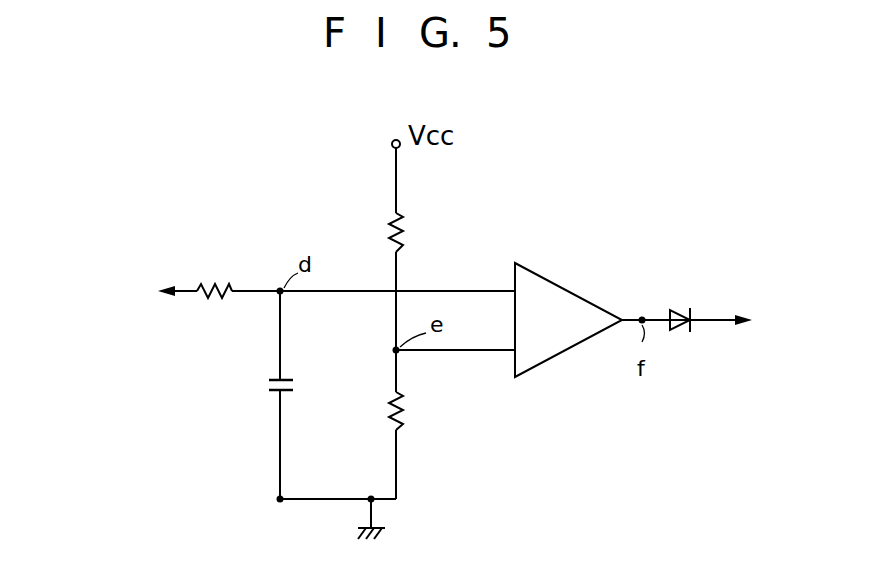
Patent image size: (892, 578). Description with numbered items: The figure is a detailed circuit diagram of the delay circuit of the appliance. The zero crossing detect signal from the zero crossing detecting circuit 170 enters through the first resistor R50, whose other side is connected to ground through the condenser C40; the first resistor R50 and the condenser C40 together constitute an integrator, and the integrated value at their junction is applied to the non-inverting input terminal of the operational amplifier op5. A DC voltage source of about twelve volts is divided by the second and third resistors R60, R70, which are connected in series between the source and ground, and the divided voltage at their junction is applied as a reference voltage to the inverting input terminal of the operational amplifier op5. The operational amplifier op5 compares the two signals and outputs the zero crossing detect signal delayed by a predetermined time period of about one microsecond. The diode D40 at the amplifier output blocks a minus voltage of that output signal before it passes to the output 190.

The zero crossing detecting circuit 170 is at (150, 290).
The output signal terminal 190 is at (780, 320).
The first resistor R50 is at (216, 271).
The second resistor R60 is at (366, 229).
The third resistor R70 is at (421, 412).
The condenser C40 is at (306, 387).
The diode D40 is at (680, 306).
The operational amplifier op5 is at (568, 320).